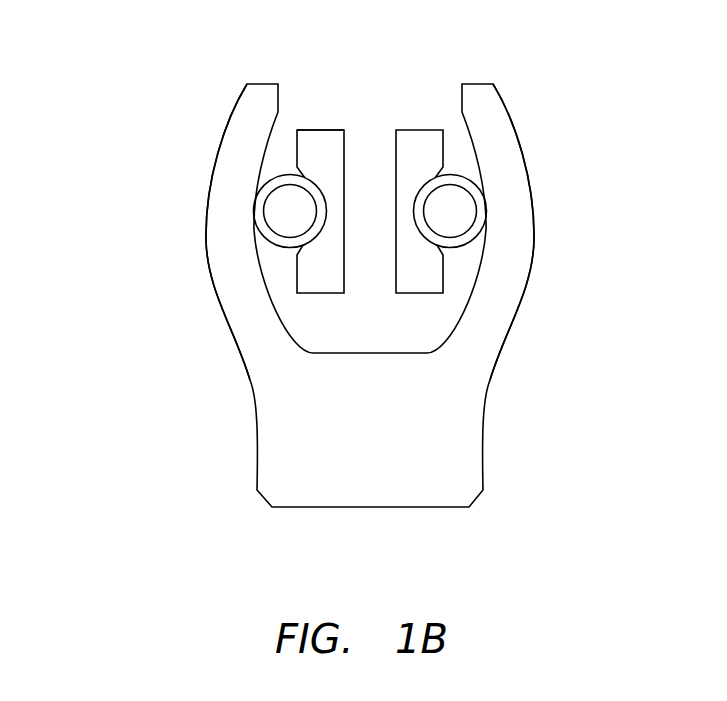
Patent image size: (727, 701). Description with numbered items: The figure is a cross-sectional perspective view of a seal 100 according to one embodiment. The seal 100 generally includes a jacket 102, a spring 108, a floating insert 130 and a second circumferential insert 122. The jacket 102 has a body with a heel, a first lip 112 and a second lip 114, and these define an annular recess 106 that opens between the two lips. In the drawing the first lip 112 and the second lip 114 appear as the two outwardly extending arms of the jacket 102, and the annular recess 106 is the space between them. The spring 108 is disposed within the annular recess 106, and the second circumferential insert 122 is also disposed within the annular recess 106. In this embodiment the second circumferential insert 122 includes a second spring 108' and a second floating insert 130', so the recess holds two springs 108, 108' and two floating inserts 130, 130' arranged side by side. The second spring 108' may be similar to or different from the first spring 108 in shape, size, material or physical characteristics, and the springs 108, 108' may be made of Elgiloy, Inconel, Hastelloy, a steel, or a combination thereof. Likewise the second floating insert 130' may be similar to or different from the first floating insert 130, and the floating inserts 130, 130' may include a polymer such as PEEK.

The seal 100 is at (330, 262).
The jacket 102 is at (482, 440).
The annular recess 106 is at (415, 103).
The spring 108 is at (507, 185).
The second spring 108' is at (221, 215).
The first lip 112 is at (527, 290).
The second lip 114 is at (211, 275).
The second circumferential insert 122 is at (305, 129).
The floating insert 130 is at (488, 191).
The second floating insert 130' is at (339, 175).